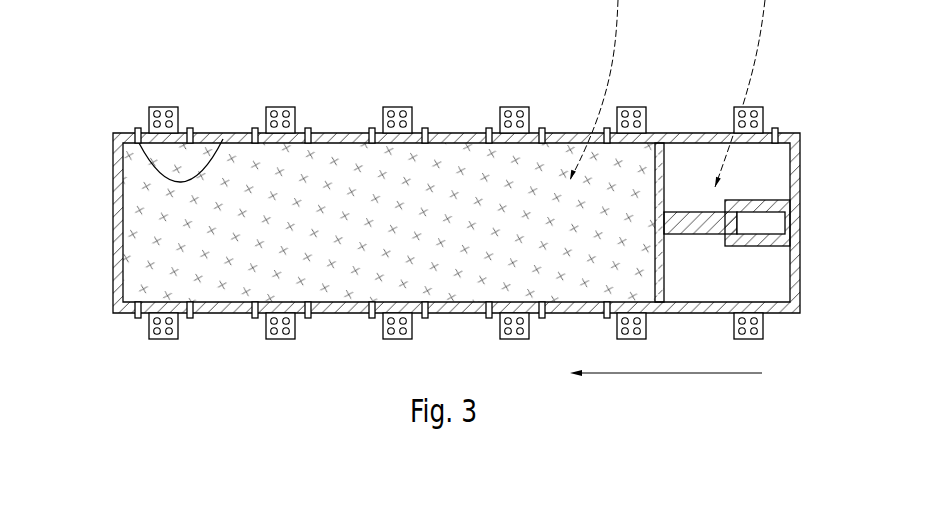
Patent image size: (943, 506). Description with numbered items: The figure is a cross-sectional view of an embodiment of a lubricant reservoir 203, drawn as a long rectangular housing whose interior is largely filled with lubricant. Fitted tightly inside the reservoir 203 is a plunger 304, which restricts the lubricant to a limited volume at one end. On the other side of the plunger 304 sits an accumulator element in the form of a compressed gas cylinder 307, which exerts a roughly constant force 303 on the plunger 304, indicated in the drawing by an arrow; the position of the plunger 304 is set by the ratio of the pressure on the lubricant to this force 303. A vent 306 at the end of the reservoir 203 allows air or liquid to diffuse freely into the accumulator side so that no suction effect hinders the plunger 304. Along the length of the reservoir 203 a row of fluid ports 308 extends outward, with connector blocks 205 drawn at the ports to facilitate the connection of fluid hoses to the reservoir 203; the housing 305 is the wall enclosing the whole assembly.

The lubricant reservoir 203 is at (207, 365).
The connector 205 is at (387, 107).
The force 303 is at (666, 387).
The plunger 304 is at (665, 165).
The housing 305 is at (139, 143).
The vent 306 is at (787, 120).
The compressed gas cylinder 307 is at (767, 258).
The fluid ports 308 is at (308, 321).